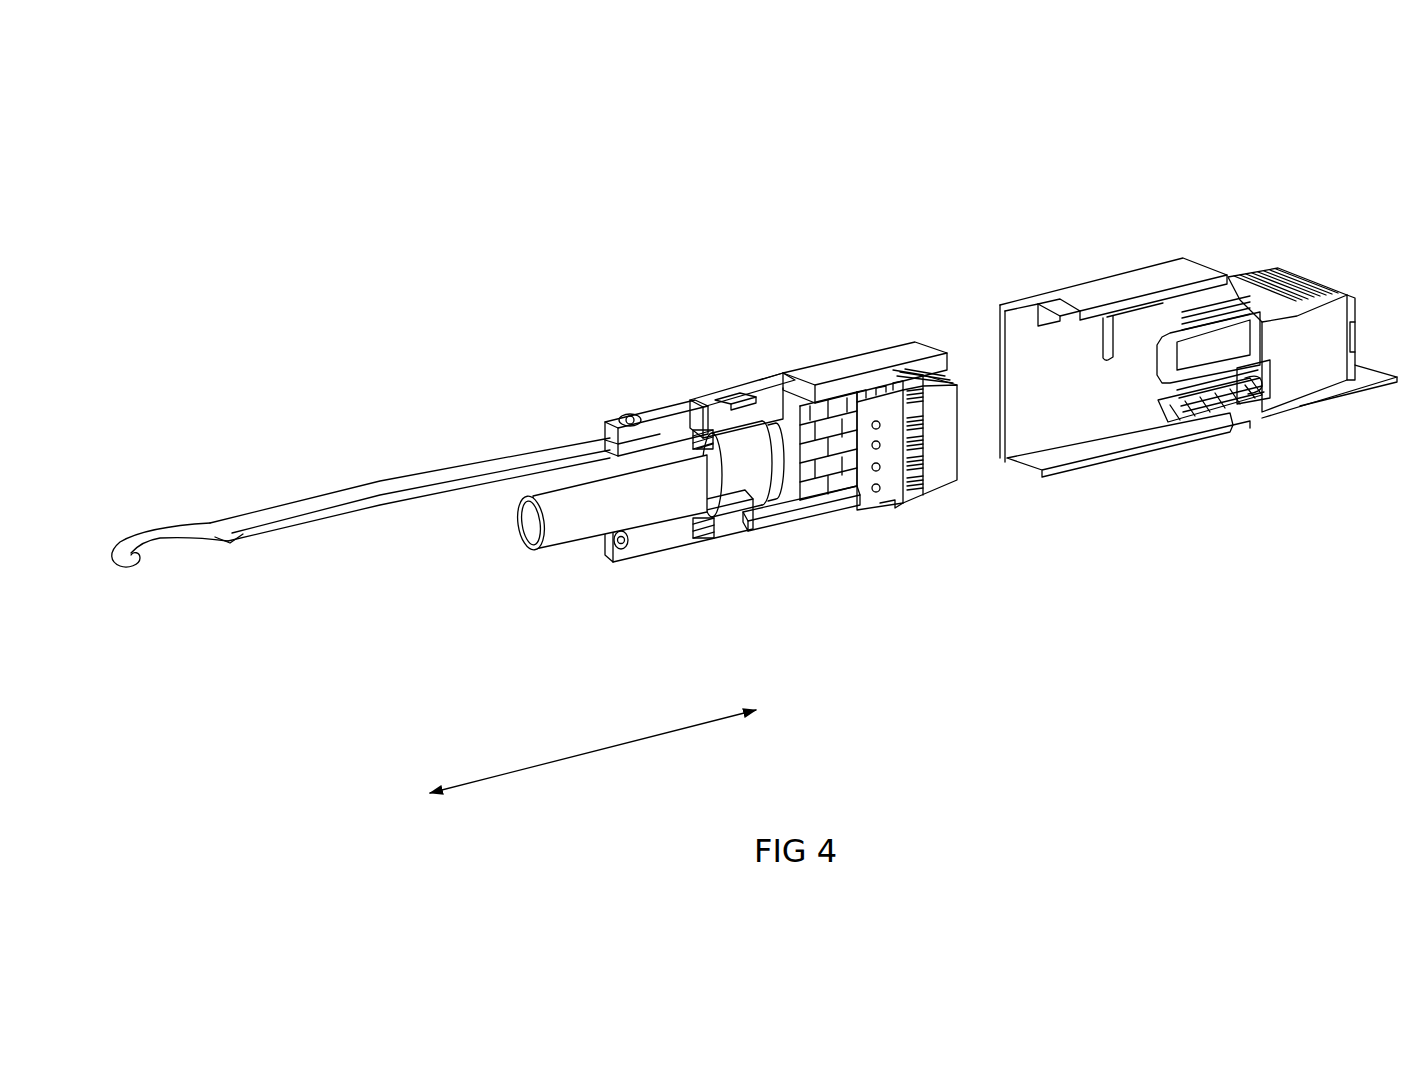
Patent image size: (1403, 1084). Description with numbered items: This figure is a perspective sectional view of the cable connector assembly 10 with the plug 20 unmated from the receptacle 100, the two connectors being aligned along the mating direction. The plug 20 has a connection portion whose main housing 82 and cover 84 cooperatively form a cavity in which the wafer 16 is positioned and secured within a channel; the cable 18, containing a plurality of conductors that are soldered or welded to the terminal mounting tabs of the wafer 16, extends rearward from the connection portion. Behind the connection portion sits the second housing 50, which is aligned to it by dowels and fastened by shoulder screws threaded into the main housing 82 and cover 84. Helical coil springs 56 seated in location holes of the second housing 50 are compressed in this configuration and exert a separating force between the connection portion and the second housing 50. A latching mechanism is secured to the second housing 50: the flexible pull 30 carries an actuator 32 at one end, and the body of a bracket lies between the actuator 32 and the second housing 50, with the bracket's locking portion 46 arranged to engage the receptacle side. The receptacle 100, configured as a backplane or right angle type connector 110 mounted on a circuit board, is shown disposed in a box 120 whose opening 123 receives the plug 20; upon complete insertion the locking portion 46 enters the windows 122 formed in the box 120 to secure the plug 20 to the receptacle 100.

The cable connector assembly 10 is at (249, 149).
The pull 30 is at (415, 472).
The plug 20 is at (592, 430).
The second housing 50 is at (660, 415).
The helical coil spring 56 is at (700, 430).
The actuator 32 is at (733, 392).
The locking portion 46 is at (767, 374).
The main housing 82 is at (825, 360).
The cover 84 is at (797, 540).
The cable 18 is at (562, 541).
The wafer 16 is at (907, 498).
The receptacle 100 is at (1238, 465).
The opening 123 is at (1021, 421).
The box 120 is at (1095, 282).
The window 122 is at (1048, 305).
The backplane or right angle type connector 110 is at (1258, 276).